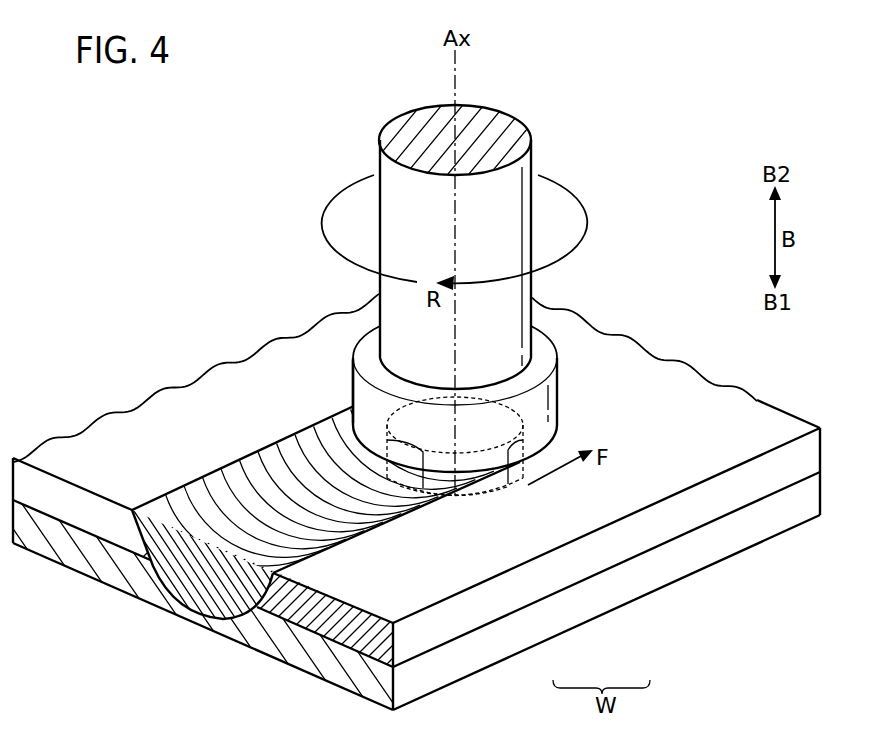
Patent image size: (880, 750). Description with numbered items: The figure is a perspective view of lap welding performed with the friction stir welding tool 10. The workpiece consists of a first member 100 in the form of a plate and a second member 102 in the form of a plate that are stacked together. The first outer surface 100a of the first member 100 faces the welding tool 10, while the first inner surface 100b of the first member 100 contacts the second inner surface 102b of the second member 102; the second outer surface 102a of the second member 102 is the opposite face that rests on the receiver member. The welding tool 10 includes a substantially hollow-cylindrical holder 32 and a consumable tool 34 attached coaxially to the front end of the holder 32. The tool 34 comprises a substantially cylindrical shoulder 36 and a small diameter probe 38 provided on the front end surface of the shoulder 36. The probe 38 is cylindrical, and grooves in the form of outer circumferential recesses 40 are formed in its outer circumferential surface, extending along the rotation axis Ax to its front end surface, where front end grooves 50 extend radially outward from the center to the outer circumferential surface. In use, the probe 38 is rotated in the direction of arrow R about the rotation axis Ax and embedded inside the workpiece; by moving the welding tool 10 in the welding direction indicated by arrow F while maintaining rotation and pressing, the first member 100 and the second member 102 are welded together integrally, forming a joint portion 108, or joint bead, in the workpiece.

The welding tool 10 is at (465, 309).
The holder 32 is at (390, 315).
The tool 34 is at (560, 338).
The shoulder 36 is at (362, 395).
The probe 38 is at (503, 490).
The outer circumferential recess 40 is at (407, 457).
The front end groove 50 is at (474, 492).
The first member 100 is at (563, 568).
The first outer surface 100a is at (732, 412).
The first inner surface 100b is at (682, 538).
The second member 102 is at (613, 592).
The second outer surface 102a is at (757, 537).
The second inner surface 102b is at (658, 544).
The joint portion 108 is at (200, 598).